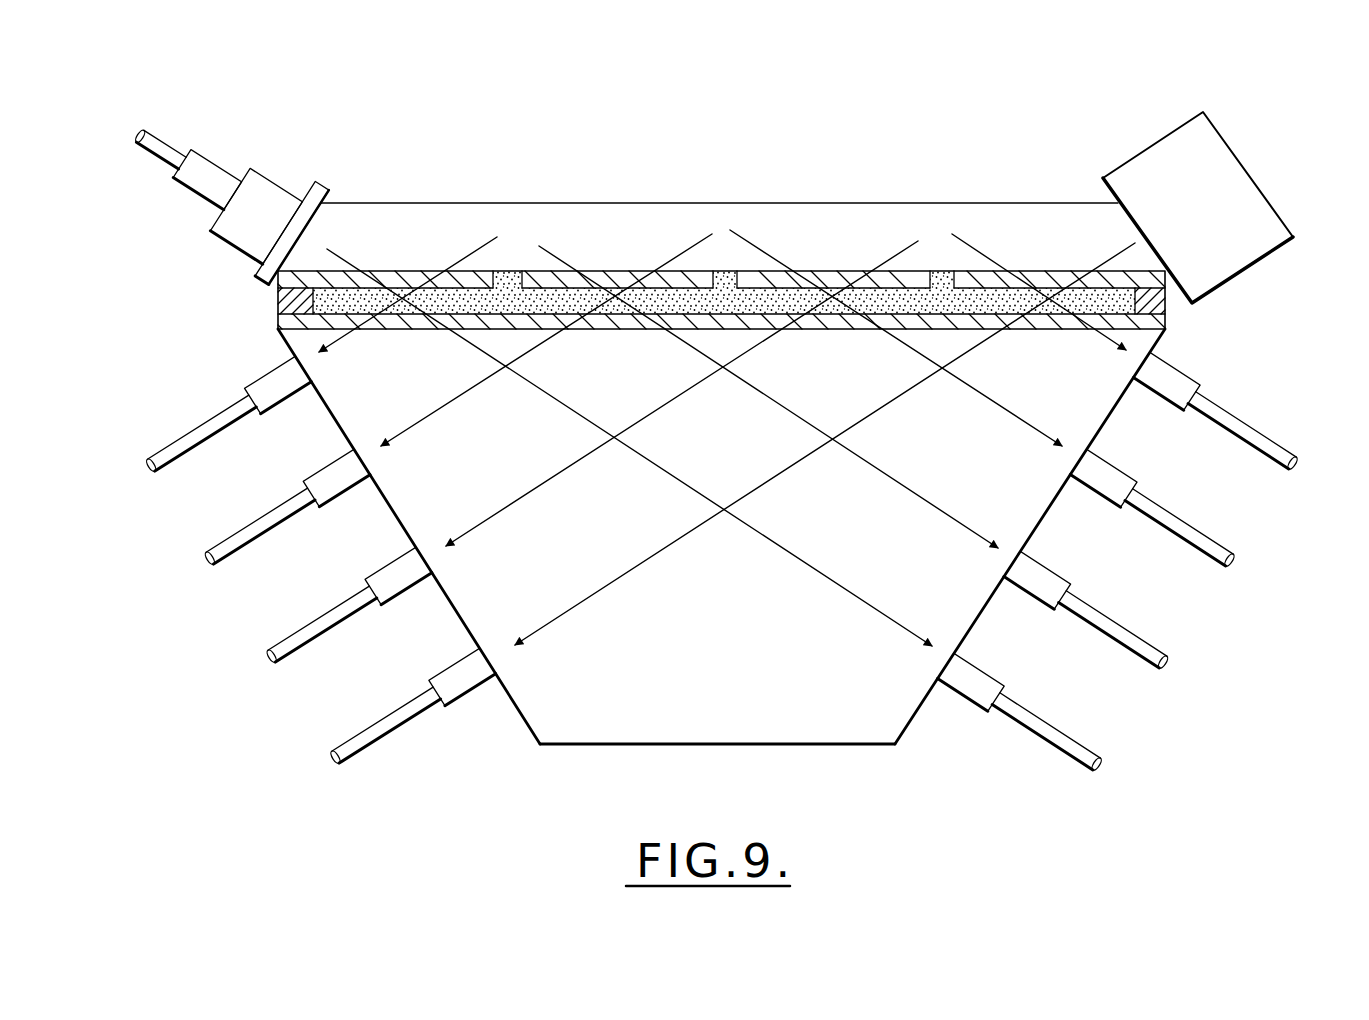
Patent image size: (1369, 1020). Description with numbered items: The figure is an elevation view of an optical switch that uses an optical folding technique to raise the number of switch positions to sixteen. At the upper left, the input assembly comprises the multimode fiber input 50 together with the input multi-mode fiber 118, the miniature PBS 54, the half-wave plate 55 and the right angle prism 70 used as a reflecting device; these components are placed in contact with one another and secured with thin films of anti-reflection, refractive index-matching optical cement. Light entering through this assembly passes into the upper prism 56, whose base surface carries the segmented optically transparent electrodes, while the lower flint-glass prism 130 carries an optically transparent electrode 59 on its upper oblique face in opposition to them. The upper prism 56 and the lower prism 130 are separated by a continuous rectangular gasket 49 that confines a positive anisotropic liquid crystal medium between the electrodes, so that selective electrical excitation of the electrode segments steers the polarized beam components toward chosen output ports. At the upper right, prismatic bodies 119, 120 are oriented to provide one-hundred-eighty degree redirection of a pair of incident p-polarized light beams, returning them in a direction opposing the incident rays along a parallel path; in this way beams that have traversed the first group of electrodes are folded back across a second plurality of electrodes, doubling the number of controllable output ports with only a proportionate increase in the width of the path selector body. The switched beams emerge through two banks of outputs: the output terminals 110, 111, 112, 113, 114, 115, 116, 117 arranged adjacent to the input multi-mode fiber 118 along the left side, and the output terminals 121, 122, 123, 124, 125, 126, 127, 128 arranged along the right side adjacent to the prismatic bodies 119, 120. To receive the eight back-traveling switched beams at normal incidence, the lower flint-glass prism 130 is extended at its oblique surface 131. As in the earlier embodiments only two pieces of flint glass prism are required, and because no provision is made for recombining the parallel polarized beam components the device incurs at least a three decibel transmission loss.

The rectangular gasket 49 is at (280, 306).
The multimode fiber input 50 is at (216, 172).
The miniature PBS 54 is at (276, 192).
The half-wave plate 55 is at (320, 188).
The upper prism 56 is at (628, 220).
The optically transparent electrode 59 is at (832, 320).
The right angle prism 70 is at (278, 188).
The output terminal 110 is at (182, 433).
The output terminal 111 is at (202, 427).
The output terminal 112 is at (247, 526).
The output terminal 113 is at (272, 517).
The output terminal 114 is at (306, 624).
The output terminal 115 is at (329, 615).
The output terminal 116 is at (368, 725).
The output terminal 117 is at (390, 717).
The input multi-mode fiber 118 is at (168, 150).
The prismatic body 119 is at (1228, 203).
The prismatic body 120 is at (1232, 150).
The output terminal 121 is at (1274, 425).
The output terminal 122 is at (1243, 420).
The output terminal 123 is at (1217, 525).
The output terminal 124 is at (1188, 522).
The output terminal 125 is at (1147, 626).
The output terminal 126 is at (1112, 622).
The output terminal 127 is at (1078, 725).
The output terminal 128 is at (1044, 721).
The lower flint-glass prism 130 is at (756, 748).
The oblique surface 131 is at (520, 717).